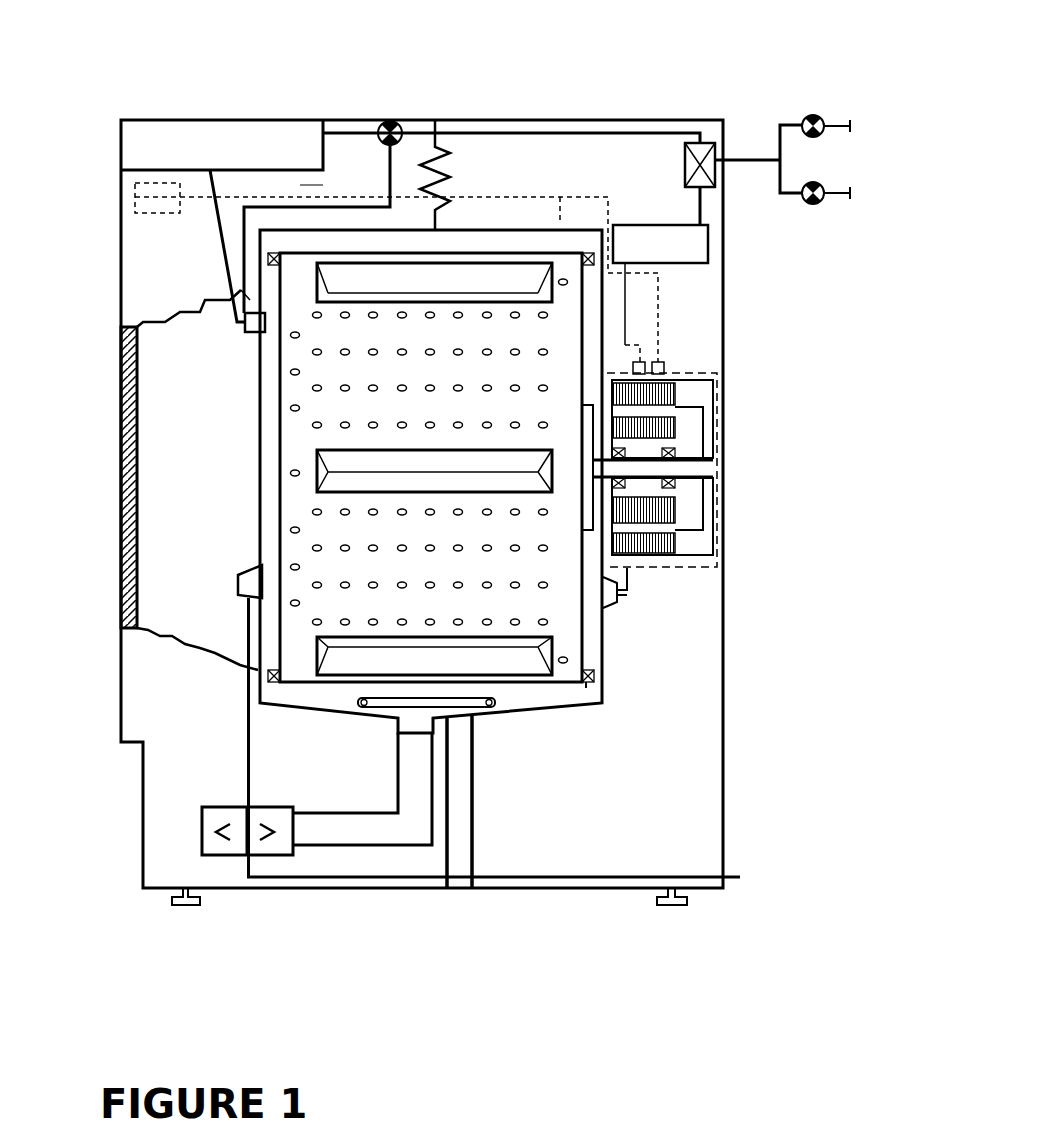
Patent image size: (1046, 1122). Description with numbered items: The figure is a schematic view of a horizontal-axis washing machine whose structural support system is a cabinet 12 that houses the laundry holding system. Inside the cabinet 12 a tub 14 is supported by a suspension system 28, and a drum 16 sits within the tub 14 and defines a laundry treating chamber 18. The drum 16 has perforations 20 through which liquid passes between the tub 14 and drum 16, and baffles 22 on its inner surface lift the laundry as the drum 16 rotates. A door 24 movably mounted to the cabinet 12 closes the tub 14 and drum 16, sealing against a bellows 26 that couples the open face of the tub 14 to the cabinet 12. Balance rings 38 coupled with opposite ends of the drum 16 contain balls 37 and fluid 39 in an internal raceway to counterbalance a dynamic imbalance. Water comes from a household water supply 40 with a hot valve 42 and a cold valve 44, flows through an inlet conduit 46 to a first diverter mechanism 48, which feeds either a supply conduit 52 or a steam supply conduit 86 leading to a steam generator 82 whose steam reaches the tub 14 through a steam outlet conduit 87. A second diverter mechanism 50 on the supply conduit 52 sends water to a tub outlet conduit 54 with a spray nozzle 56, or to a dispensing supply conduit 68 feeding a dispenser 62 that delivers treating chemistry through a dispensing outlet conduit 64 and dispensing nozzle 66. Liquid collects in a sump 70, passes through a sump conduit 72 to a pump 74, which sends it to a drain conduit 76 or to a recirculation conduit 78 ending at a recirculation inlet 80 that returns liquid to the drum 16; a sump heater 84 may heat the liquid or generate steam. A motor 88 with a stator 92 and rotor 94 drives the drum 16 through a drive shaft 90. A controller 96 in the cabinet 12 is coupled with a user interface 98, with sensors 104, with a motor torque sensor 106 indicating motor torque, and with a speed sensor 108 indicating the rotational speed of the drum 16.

The cabinet 12 is at (636, 120).
The tub 14 is at (470, 230).
The drum 16 is at (355, 253).
The laundry treating chamber 18 is at (404, 395).
The perforations 20 is at (553, 349).
The baffles 22 is at (528, 662).
The door 24 is at (118, 455).
The bellows 26 is at (165, 642).
The suspension system 28 is at (420, 157).
The balls 37 is at (590, 686).
The balance ring 38 is at (262, 681).
The fluid 39 is at (594, 676).
The household water supply 40 is at (839, 112).
The hot water valve 42 is at (814, 114).
The cold water valve 44 is at (818, 204).
The inlet conduit 46 is at (745, 160).
The first diverter mechanism 48 is at (710, 143).
The second diverter mechanism 50 is at (390, 120).
The supply conduit 52 is at (565, 133).
The tub outlet conduit 54 is at (308, 200).
The spray nozzle 56 is at (258, 303).
The dispenser 62 is at (265, 145).
The dispensing outlet conduit 64 is at (228, 265).
The dispensing nozzle 66 is at (247, 328).
The dispensing supply conduit 68 is at (358, 133).
The sump 70 is at (462, 792).
The sump conduit 72 is at (407, 823).
The pump 74 is at (226, 856).
The drain conduit 76 is at (752, 868).
The recirculation conduit 78 is at (246, 745).
The recirculation inlet 80 is at (243, 583).
The steam generator 82 is at (708, 245).
The sump heater 84 is at (476, 724).
The steam supply conduit 86 is at (702, 193).
The steam outlet conduit 87 is at (628, 588).
The motor 88 is at (719, 373).
The drive shaft 90 is at (685, 472).
The stator 92 is at (667, 385).
The rotor 94 is at (665, 425).
The controller 96 is at (160, 221).
The user interface 98 is at (121, 198).
The sensors 104 is at (560, 230).
The motor torque sensor 106 is at (660, 360).
The speed sensor 108 is at (642, 360).